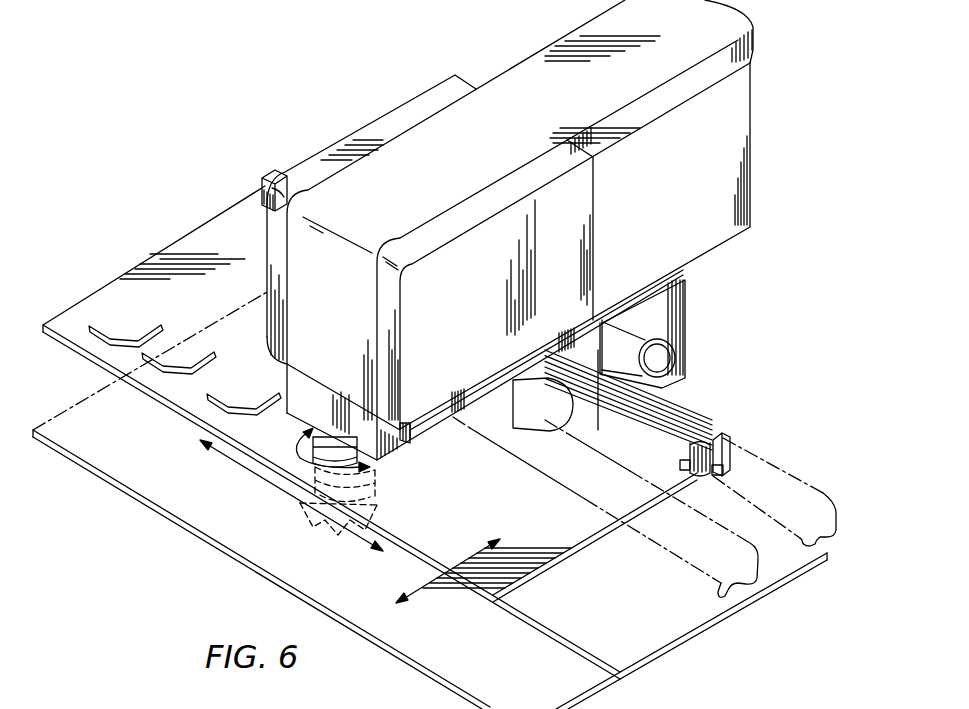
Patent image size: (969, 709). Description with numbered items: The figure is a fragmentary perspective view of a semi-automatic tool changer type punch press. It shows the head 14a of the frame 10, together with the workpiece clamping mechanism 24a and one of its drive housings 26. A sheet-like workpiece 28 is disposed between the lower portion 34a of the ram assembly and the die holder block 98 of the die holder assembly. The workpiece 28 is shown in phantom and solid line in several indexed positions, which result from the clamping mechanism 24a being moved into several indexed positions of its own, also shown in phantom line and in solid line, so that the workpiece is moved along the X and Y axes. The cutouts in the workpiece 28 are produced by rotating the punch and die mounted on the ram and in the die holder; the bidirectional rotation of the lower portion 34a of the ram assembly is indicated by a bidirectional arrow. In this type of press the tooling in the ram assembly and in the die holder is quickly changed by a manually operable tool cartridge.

The frame 10 is at (758, 186).
The head 14a is at (504, 98).
The workpiece clamping mechanism 24a is at (765, 407).
The drive housing 26 is at (673, 318).
The sheet-like workpiece 28 is at (133, 303).
The lower portion of the ram assembly 34a is at (322, 451).
The die holder block 98 is at (331, 530).